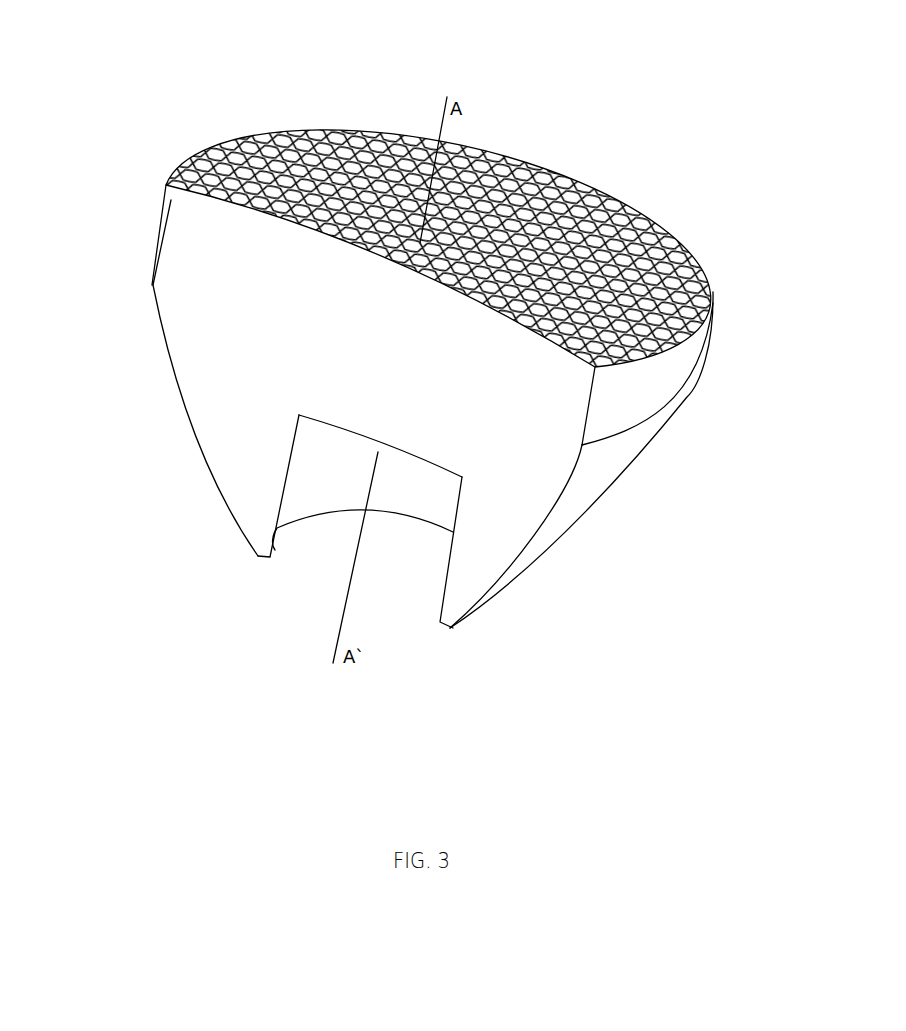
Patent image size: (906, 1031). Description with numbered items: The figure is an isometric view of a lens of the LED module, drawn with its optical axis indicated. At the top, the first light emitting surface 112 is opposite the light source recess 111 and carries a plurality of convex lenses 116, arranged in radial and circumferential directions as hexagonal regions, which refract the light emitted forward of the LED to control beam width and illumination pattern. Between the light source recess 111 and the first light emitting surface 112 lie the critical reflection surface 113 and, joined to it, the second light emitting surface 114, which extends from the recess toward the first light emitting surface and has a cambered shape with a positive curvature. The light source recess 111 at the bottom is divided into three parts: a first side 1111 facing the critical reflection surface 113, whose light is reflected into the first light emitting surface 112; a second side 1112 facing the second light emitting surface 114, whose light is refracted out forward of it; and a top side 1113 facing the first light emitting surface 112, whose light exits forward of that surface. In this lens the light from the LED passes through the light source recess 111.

The light source recess 111 is at (252, 543).
The first side 1111 is at (375, 592).
The second side 1112 is at (280, 552).
The top side 1113 is at (353, 442).
The first light emitting surface 112 is at (582, 177).
The critical reflection surface 113 is at (590, 470).
The second light emitting surface 114 is at (223, 413).
The convex lenses 116 is at (290, 183).